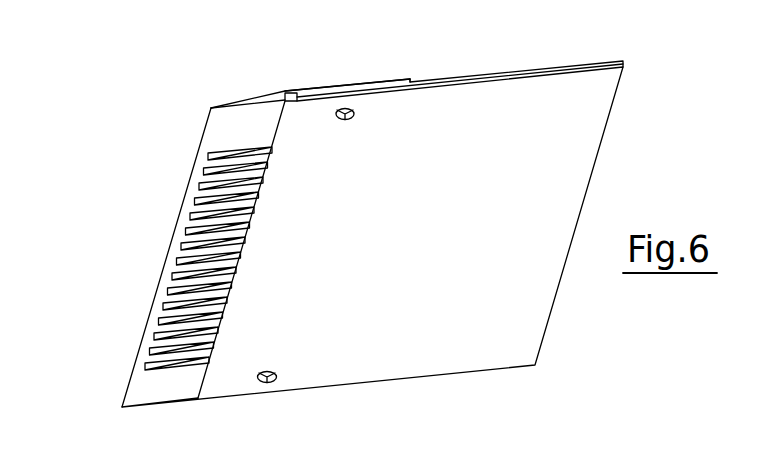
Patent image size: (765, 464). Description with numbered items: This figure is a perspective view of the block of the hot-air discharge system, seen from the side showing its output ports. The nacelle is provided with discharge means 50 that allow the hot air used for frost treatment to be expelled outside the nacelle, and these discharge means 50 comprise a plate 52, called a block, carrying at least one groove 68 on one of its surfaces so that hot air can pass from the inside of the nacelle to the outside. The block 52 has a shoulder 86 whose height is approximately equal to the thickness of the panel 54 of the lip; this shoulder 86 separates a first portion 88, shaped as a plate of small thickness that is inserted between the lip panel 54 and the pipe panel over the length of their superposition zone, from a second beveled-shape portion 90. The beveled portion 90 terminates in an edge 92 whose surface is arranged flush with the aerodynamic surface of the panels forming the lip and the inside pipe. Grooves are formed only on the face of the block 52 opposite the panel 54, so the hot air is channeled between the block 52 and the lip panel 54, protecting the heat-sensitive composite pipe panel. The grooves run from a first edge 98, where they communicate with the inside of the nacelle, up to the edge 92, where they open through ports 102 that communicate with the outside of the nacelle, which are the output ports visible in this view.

The discharge means 50 is at (327, 234).
The plate 52 is at (391, 63).
The panel 54 is at (518, 100).
The groove 68 is at (562, 457).
The shoulder 86 is at (289, 91).
The first portion 88 is at (388, 78).
The second beveled-shape portion 90 is at (257, 98).
The edge 92 is at (143, 387).
The first edge 98 is at (417, 78).
The ports 102 is at (186, 216).